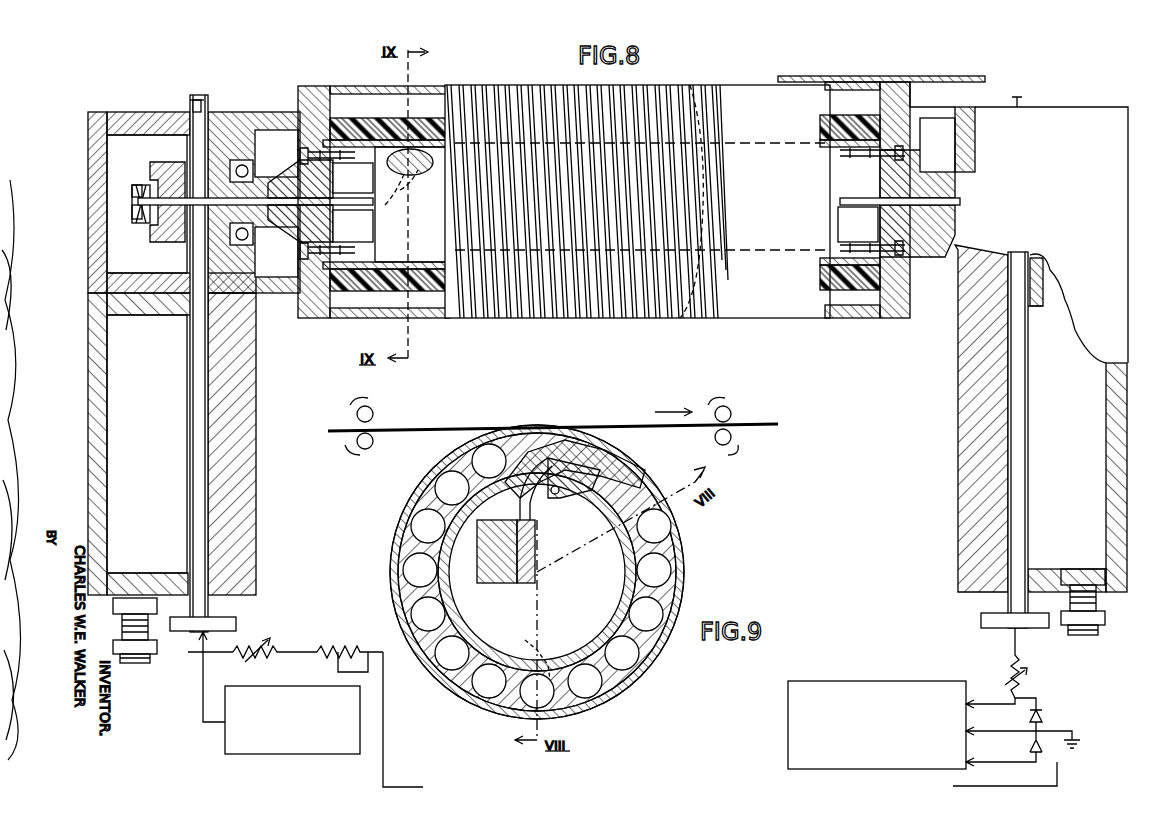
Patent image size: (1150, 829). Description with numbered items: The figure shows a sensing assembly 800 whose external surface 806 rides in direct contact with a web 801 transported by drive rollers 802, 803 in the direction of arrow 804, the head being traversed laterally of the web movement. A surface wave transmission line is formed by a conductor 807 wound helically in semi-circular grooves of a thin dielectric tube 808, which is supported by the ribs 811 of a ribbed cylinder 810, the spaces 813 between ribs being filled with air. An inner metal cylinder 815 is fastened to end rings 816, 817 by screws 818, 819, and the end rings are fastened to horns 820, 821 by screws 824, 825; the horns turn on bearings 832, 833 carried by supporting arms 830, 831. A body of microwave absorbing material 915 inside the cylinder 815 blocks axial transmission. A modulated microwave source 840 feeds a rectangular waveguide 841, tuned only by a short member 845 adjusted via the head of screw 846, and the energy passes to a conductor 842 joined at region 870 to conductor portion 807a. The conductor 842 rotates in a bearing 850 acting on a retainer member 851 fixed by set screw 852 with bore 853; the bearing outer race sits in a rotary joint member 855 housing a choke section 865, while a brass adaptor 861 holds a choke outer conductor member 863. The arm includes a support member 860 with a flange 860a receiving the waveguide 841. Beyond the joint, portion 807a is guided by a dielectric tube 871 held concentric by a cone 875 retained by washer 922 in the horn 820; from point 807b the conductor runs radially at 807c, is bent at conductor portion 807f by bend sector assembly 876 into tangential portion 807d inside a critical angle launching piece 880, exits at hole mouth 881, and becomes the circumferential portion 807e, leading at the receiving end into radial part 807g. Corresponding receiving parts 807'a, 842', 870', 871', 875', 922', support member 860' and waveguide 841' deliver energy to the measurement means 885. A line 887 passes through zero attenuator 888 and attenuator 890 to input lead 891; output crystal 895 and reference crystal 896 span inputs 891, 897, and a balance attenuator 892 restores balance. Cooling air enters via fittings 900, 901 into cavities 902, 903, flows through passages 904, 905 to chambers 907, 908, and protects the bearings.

In FIG. 8, the sensing assembly 800 is at (920, 84).
In FIG. 8, the web 801 is at (805, 76).
In FIG. 9, the web 801 is at (405, 428).
In FIG. 9, the drive roller 802 is at (380, 452).
In FIG. 9, the drive roller 803 is at (735, 455).
In FIG. 9, the arrow 804 is at (680, 408).
In FIG. 8, the external surface 806 is at (345, 86).
In FIG. 9, the external surface 806 is at (690, 565).
In FIG. 8, the conductor 807 is at (477, 67).
In FIG. 8, the conductor portion 807a is at (282, 178).
In FIG. 8, the conductor portion 807'a is at (957, 203).
In FIG. 9, the conductor point 807b is at (518, 584).
In FIG. 8, the radial conductor portion 807c is at (418, 186).
In FIG. 9, the radial conductor portion 807c is at (536, 530).
In FIG. 9, the tangential conductor portion 807d is at (600, 455).
In FIG. 9, the circumferential conductor portion 807e is at (688, 590).
In FIG. 9, the conductor portion 807f is at (540, 460).
In FIG. 9, the radially extending conductor part 807g is at (610, 700).
In FIG. 8, the thin dielectric tube 808 is at (850, 82).
In FIG. 9, the thin dielectric tube 808 is at (392, 545).
In FIG. 8, the ribbed cylinder 810 is at (330, 88).
In FIG. 9, the ribbed cylinder 810 is at (392, 580).
In FIG. 8, the ribs 811 is at (893, 84).
In FIG. 9, the ribs 811 is at (572, 452).
In FIG. 9, the spaces between ribs 813 is at (640, 660).
In FIG. 8, the inner cylinder 815 is at (398, 226).
In FIG. 9, the inner cylinder 815 is at (565, 648).
In FIG. 8, the end ring 816 is at (308, 318).
In FIG. 8, the end ring 817 is at (855, 318).
In FIG. 8, the screw 818 is at (358, 318).
In FIG. 8, the screw 819 is at (826, 290).
In FIG. 8, the horn 820 is at (312, 86).
In FIG. 8, the horn 821 is at (920, 95).
In FIG. 8, the screw 824 is at (300, 112).
In FIG. 8, the screw 825 is at (905, 300).
In FIG. 8, the supporting arm 830 is at (90, 152).
In FIG. 8, the supporting arm 831 is at (1080, 107).
In FIG. 8, the bearing 832 is at (190, 262).
In FIG. 8, the bearing 833 is at (968, 240).
In FIG. 8, the modulated microwave source 840 is at (248, 754).
In FIG. 8, the rectangular waveguide 841 is at (235, 363).
In FIG. 8, the rectangular waveguide 841' is at (1027, 440).
In FIG. 8, the conductor 842 is at (242, 129).
In FIG. 8, the conductor 842' is at (941, 206).
In FIG. 8, the waveguide short member 845 is at (194, 106).
In FIG. 8, the screw 846 is at (196, 98).
In FIG. 8, the bearing 850 is at (140, 226).
In FIG. 8, the retainer member 851 is at (132, 188).
In FIG. 8, the set screw 852 is at (132, 212).
In FIG. 8, the bore 853 is at (132, 196).
In FIG. 8, the rotary joint member 855 is at (112, 115).
In FIG. 8, the support member 860 is at (277, 461).
In FIG. 8, the support member 860' is at (908, 521).
In FIG. 8, the flange 860a is at (278, 293).
In FIG. 8, the brass adaptor 861 is at (236, 160).
In FIG. 8, the choke outer conductor member 863 is at (146, 226).
In FIG. 8, the choke section 865 is at (152, 176).
In FIG. 8, the joint 870 is at (276, 252).
In FIG. 8, the joint 870' is at (993, 190).
In FIG. 8, the dielectric tube 871 is at (350, 220).
In FIG. 8, the dielectric tube 871' is at (858, 224).
In FIG. 8, the cone 875 is at (320, 201).
In FIG. 9, the cone 875 is at (610, 605).
In FIG. 8, the cone 875' is at (937, 145).
In FIG. 8, the bend sector assembly 876 is at (433, 164).
In FIG. 9, the bend sector assembly 876 is at (552, 496).
In FIG. 9, the critical angle launching piece 880 is at (598, 455).
In FIG. 9, the hole mouth 881 is at (645, 470).
In FIG. 8, the microwave energy measurement means 885 is at (862, 681).
In FIG. 8, the line 887 is at (197, 680).
In FIG. 8, the zero microwave attenuator 888 is at (262, 662).
In FIG. 8, the second microwave attenuator 890 is at (338, 650).
In FIG. 8, the input lead 891 is at (383, 722).
In FIG. 8, the balance microwave attenuator 892 is at (1022, 670).
In FIG. 8, the output crystal 895 is at (1045, 718).
In FIG. 8, the reference crystal 896 is at (1045, 750).
In FIG. 8, the input line 897 is at (1012, 690).
In FIG. 8, the fitting 900 is at (133, 663).
In FIG. 8, the fitting 901 is at (1085, 650).
In FIG. 8, the cavity 902 is at (90, 460).
In FIG. 8, the cavity 903 is at (1110, 445).
In FIG. 8, the passage 904 is at (242, 352).
In FIG. 8, the passage 905 is at (965, 340).
In FIG. 8, the chamber 907 is at (268, 118).
In FIG. 8, the chamber 908 is at (948, 118).
In FIG. 8, the microwave absorbing material 915 is at (695, 318).
In FIG. 8, the retaining washer 922 is at (389, 193).
In FIG. 8, the retaining washer 922' is at (837, 200).